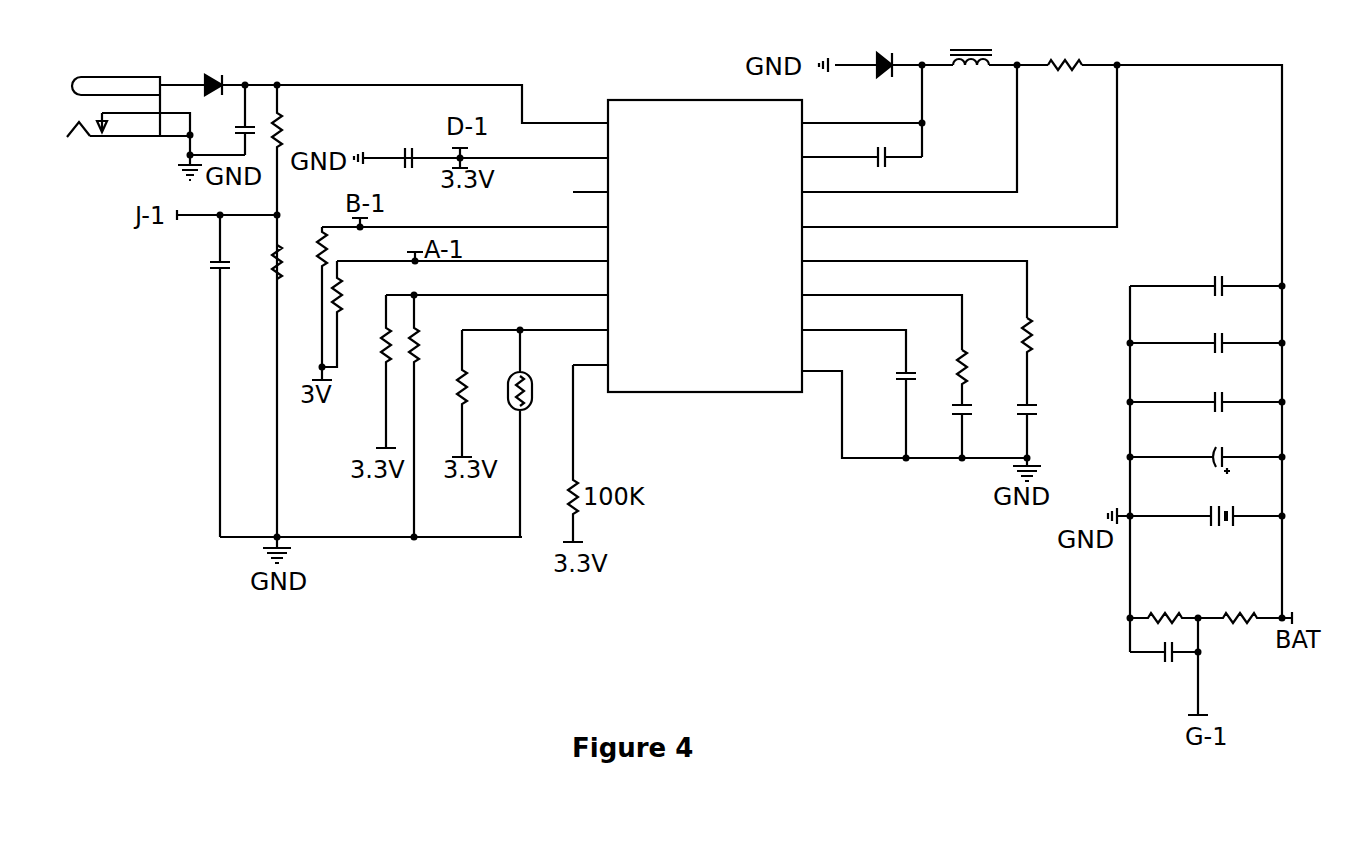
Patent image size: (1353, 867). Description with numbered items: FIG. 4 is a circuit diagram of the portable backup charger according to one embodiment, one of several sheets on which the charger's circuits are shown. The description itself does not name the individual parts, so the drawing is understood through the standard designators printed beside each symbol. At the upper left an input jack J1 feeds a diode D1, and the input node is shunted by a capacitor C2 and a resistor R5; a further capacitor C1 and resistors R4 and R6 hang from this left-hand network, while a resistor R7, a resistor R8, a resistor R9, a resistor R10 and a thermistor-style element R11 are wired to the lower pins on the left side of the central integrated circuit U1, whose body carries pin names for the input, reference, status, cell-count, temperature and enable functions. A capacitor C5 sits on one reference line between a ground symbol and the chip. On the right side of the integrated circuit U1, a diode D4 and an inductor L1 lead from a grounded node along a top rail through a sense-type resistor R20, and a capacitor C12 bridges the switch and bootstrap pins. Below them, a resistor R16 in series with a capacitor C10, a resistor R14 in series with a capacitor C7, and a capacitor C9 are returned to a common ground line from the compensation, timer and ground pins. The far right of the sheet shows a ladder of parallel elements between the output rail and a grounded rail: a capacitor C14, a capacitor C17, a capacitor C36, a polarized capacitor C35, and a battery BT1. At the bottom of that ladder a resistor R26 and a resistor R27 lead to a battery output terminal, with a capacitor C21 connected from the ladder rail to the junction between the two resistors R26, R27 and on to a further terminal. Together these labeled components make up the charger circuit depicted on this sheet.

The power input jack J1 is at (156, 107).
The input diode D1 is at (214, 65).
The input capacitor C2 is at (226, 120).
The resistor R5 is at (298, 311).
The capacitor C1 is at (200, 376).
The resistor R4 is at (257, 262).
The resistor R6 is at (306, 297).
The resistor R7 is at (350, 314).
The resistor R8 is at (369, 371).
The resistor R9 is at (432, 416).
The resistor R10 is at (482, 393).
The NTC thermistor R11 is at (540, 433).
The capacitor C5 is at (408, 141).
The MP2612 charger IC U1 is at (703, 255).
The diode D4 is at (879, 51).
The inductor L1 is at (971, 41).
The sense resistor R20 is at (1069, 48).
The bootstrap capacitor C12 is at (929, 159).
The compensation resistor R16 is at (1058, 361).
The compensation capacitor C10 is at (1053, 427).
The compensation resistor R14 is at (989, 375).
The compensation capacitor C7 is at (980, 427).
The timer capacitor C9 is at (923, 410).
The output capacitor C14 is at (1206, 270).
The output capacitor C17 is at (1206, 327).
The output capacitor C36 is at (1206, 386).
The electrolytic output capacitor C35 is at (1206, 445).
The battery BT1 is at (1206, 500).
The resistor R26 is at (1164, 602).
The resistor R27 is at (1240, 602).
The capacitor C21 is at (1167, 669).